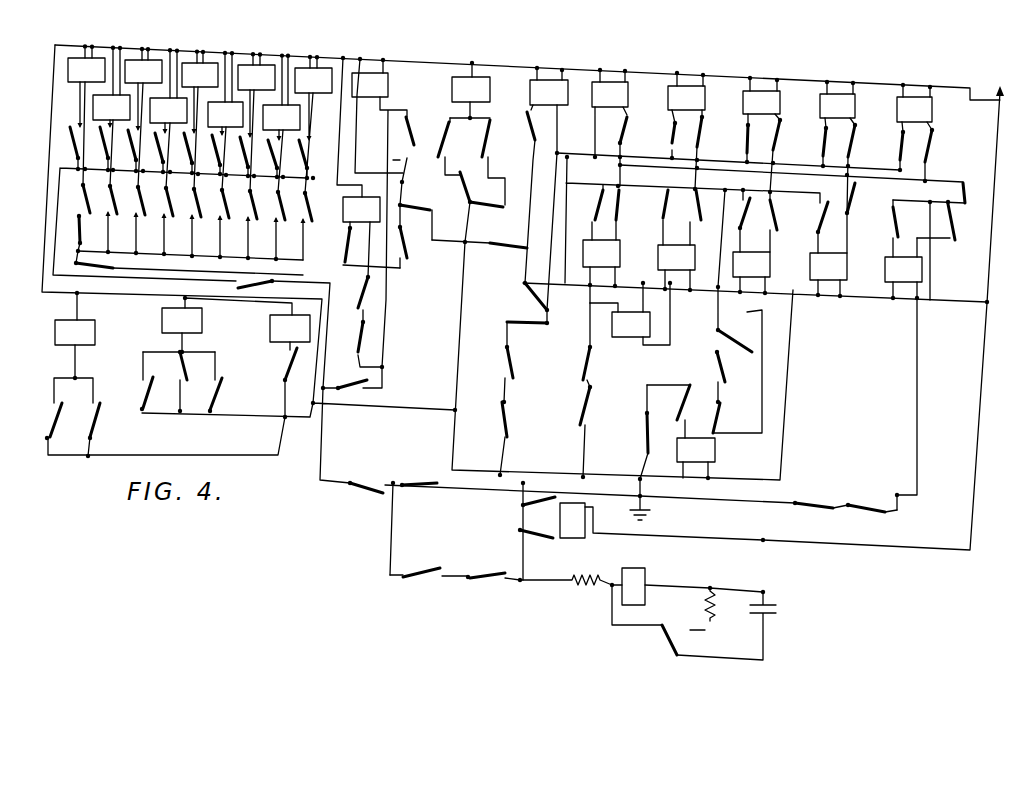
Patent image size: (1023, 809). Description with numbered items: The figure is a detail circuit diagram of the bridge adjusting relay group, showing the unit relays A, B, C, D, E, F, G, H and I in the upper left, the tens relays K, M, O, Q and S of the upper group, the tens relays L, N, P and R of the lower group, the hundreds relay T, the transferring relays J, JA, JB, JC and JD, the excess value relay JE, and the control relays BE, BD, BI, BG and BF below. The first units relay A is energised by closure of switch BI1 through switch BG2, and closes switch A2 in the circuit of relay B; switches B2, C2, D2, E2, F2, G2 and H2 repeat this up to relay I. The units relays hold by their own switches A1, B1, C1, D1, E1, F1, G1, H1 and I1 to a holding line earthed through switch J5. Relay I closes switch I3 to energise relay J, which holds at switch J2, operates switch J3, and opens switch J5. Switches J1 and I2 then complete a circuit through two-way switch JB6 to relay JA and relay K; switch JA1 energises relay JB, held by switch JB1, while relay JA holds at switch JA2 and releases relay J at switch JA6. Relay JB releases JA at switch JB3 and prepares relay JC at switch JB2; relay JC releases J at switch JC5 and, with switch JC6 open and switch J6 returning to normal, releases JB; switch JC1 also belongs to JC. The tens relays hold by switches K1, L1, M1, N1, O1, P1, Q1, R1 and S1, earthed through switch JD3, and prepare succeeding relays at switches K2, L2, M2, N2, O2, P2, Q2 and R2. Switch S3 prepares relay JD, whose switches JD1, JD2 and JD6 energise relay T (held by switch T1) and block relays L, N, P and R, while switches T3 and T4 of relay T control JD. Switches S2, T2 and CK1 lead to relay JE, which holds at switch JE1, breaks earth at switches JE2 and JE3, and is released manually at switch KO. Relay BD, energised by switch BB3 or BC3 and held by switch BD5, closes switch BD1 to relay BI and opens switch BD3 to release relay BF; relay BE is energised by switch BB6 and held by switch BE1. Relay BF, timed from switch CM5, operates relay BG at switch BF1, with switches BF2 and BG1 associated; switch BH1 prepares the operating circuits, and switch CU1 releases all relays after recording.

The unit relay A is at (86, 115).
The unit relay B is at (111, 117).
The unit relay C is at (143, 118).
The unit relay D is at (168, 119).
The unit relay E is at (200, 120).
The unit relay F is at (225, 121).
The unit relay G is at (256, 122).
The unit relay H is at (281, 124).
The unit relay I is at (313, 125).
The transferring relay J is at (370, 85).
The relay JA is at (549, 110).
The relay JB is at (470, 90).
The relay JC is at (630, 314).
The relay JD is at (361, 237).
The excess value relay JE is at (696, 458).
The tens relay K is at (610, 113).
The tens relay L is at (601, 261).
The tens relay M is at (686, 98).
The tens relay N is at (676, 255).
The tens relay O is at (761, 101).
The tens relay P is at (751, 260).
The tens relay Q is at (837, 105).
The tens relay R is at (828, 264).
The tens relay S is at (914, 108).
The hundreds relay T is at (903, 374).
The relay BE is at (74, 348).
The relay BD is at (217, 325).
The relay BI is at (290, 332).
The relay BG is at (572, 520).
The capacity-slugged relay BF is at (699, 614).
The holding switch A1 is at (66, 148).
The holding switch B1 is at (97, 148).
The holding switch C1 is at (125, 150).
The holding switch D1 is at (152, 152).
The holding switch E1 is at (181, 153).
The holding switch F1 is at (209, 154).
The holding switch G1 is at (237, 156).
The holding switch H1 is at (266, 158).
The holding switch I1 is at (295, 159).
The switch BI1 is at (75, 199).
The switch BG2 is at (95, 233).
The switch A2 is at (120, 217).
The switch B2 is at (148, 218).
The switch C2 is at (176, 220).
The switch D2 is at (204, 221).
The switch E2 is at (231, 223).
The switch F2 is at (259, 224).
The switch G2 is at (288, 225).
The switch H2 is at (316, 226).
The switch J3 is at (94, 258).
The switch J5 is at (255, 292).
The switch BB6 is at (153, 429).
The switch BE1 is at (106, 429).
The switch BD5 is at (132, 380).
The switch BB3 is at (167, 381).
The switch BC3 is at (230, 381).
The switch BD1 is at (275, 382).
The switch J2 is at (394, 149).
The switch JA6 is at (377, 162).
The switch JC5 is at (417, 211).
The switch JD2 is at (418, 239).
The switch T4 is at (361, 248).
The switch S3 is at (354, 299).
The switch T3 is at (358, 355).
The switch I3 is at (345, 379).
The switch JA1 is at (436, 146).
The switch JB1 is at (477, 162).
The switch J6 is at (472, 188).
The switch JC6 is at (486, 217).
The switch JB3 is at (479, 254).
The switch JA2 is at (511, 197).
The two-way switch JB6 is at (543, 231).
The switch JD6 is at (520, 324).
The switch J1 is at (493, 374).
The switch I2 is at (491, 438).
The switch JC1 is at (565, 345).
The switch JB2 is at (563, 432).
The switch JE1 is at (668, 401).
The switch K0 KO is at (630, 432).
The switch CK1 is at (737, 311).
The switch S2 is at (732, 377).
The switch T2 is at (729, 418).
The switch K1 is at (613, 151).
The switch L1 is at (660, 140).
The switch M2 is at (709, 153).
The switch N1 is at (734, 143).
The switch O2 is at (785, 156).
The switch P1 is at (810, 147).
The switch Q2 is at (862, 169).
The switch R2 is at (862, 218).
The switch R1 is at (886, 151).
The switch S1 is at (941, 155).
The switch K2 is at (590, 202).
The switch L2 is at (628, 206).
The switch M1 is at (677, 207).
The switch N2 is at (710, 209).
The switch O1 is at (738, 209).
The switch P2 is at (784, 213).
The switch Q1 is at (832, 220).
The switch JD1 is at (910, 218).
The switch T1 is at (947, 222).
The switch JD3 is at (942, 241).
The switch BH1 is at (363, 497).
The switch JE2 is at (413, 529).
The switch CM5 is at (429, 564).
The switch BD3 is at (546, 573).
The switch BG1 is at (518, 531).
The switch BF1 is at (515, 533).
The switch BF2 is at (644, 620).
The switch JE3 is at (816, 521).
The switch CU1 is at (877, 523).